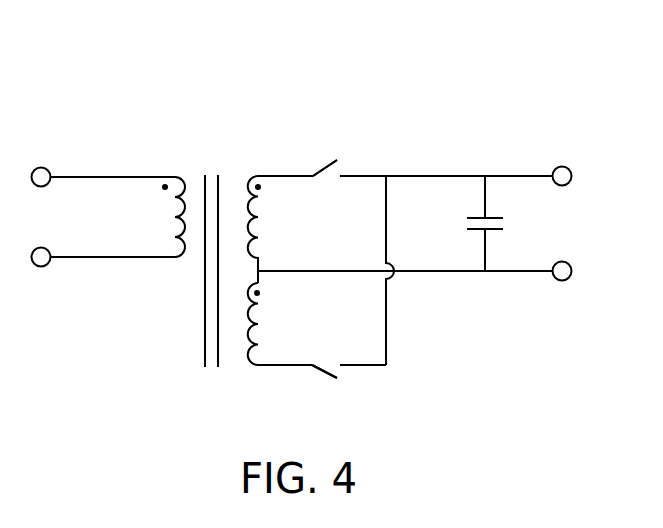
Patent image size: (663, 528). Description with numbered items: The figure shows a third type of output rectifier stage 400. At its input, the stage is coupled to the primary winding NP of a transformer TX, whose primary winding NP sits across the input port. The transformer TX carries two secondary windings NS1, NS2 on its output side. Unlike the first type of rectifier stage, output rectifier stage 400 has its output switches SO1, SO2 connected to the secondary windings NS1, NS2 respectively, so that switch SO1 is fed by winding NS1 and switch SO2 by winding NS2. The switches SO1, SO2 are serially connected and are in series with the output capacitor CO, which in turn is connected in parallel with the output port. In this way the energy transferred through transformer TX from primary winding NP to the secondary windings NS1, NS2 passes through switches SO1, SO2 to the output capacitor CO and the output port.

The output rectifier stage 400 is at (320, 216).
The transformer TX is at (212, 255).
The primary winding NP is at (164, 217).
The first secondary winding NS1 is at (280, 229).
The second secondary winding NS2 is at (280, 324).
The output switch SO1 is at (329, 151).
The output switch SO2 is at (328, 389).
The output capacitor CO is at (467, 223).